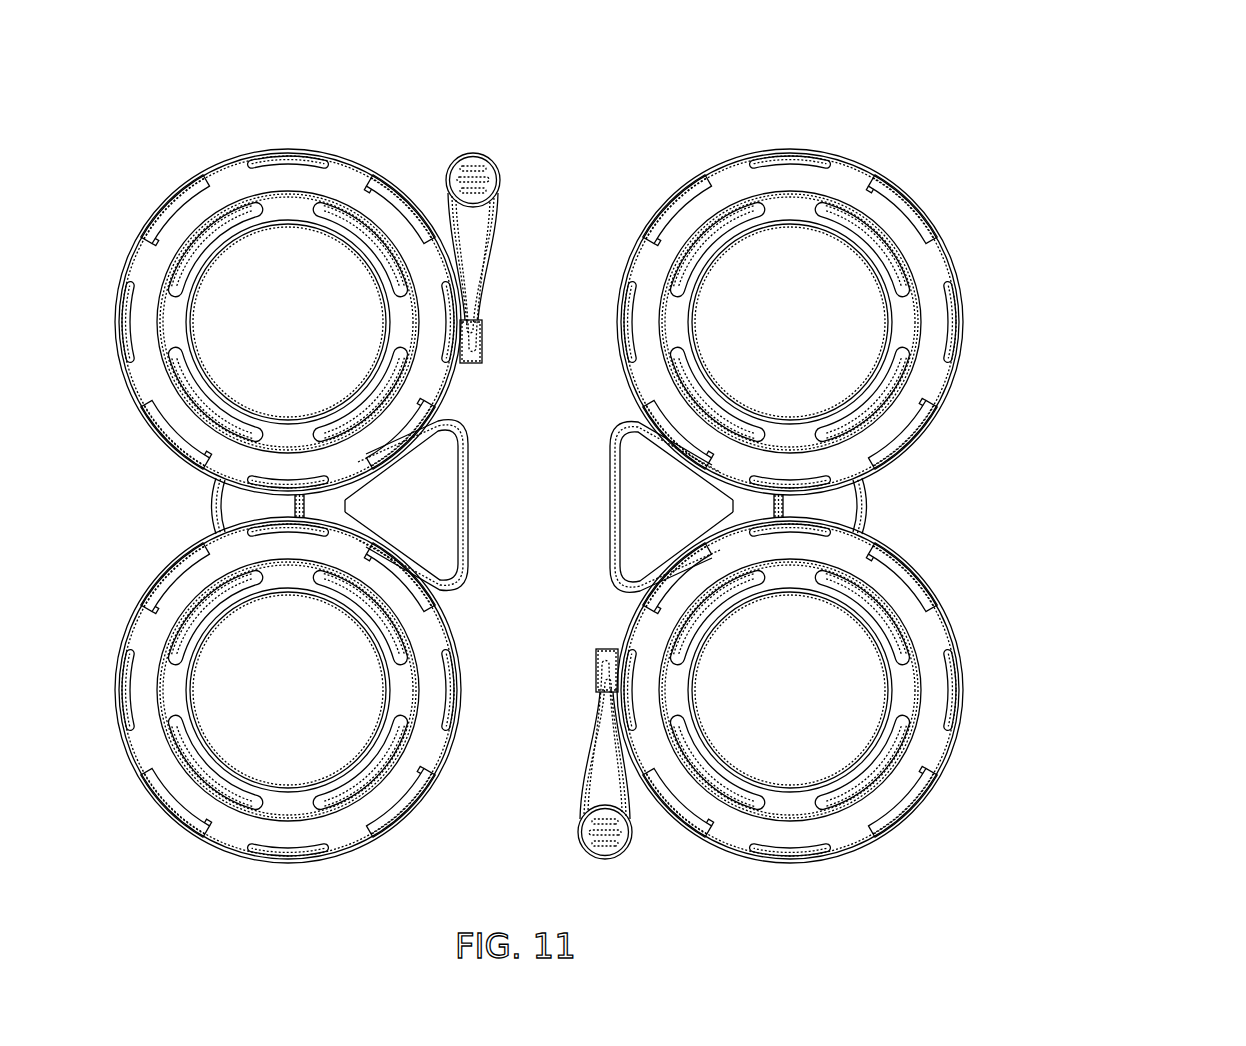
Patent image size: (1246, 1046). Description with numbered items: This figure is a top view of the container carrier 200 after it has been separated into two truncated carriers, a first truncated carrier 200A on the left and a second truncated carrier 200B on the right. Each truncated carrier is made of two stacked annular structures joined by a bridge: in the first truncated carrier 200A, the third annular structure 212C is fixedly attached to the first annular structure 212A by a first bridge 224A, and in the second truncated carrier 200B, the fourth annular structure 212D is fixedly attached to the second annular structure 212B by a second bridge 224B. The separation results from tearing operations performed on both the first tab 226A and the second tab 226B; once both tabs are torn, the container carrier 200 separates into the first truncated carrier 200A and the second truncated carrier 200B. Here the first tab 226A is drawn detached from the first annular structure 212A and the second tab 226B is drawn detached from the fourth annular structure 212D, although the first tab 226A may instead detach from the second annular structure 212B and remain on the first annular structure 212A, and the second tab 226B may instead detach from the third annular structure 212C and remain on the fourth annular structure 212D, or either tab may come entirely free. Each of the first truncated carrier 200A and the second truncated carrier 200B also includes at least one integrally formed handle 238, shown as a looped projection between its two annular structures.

The container carrier 200 is at (654, 477).
The first truncated carrier 200A is at (312, 501).
The second truncated carrier 200B is at (813, 501).
The first annular structure 212A is at (228, 866).
The second annular structure 212B is at (729, 866).
The third annular structure 212C is at (228, 143).
The fourth annular structure 212D is at (729, 143).
The first bridge 224A is at (232, 497).
The second bridge 224B is at (846, 497).
The first tab 226A is at (588, 850).
The second tab 226B is at (492, 162).
The integrally formed handle 238 is at (458, 522).